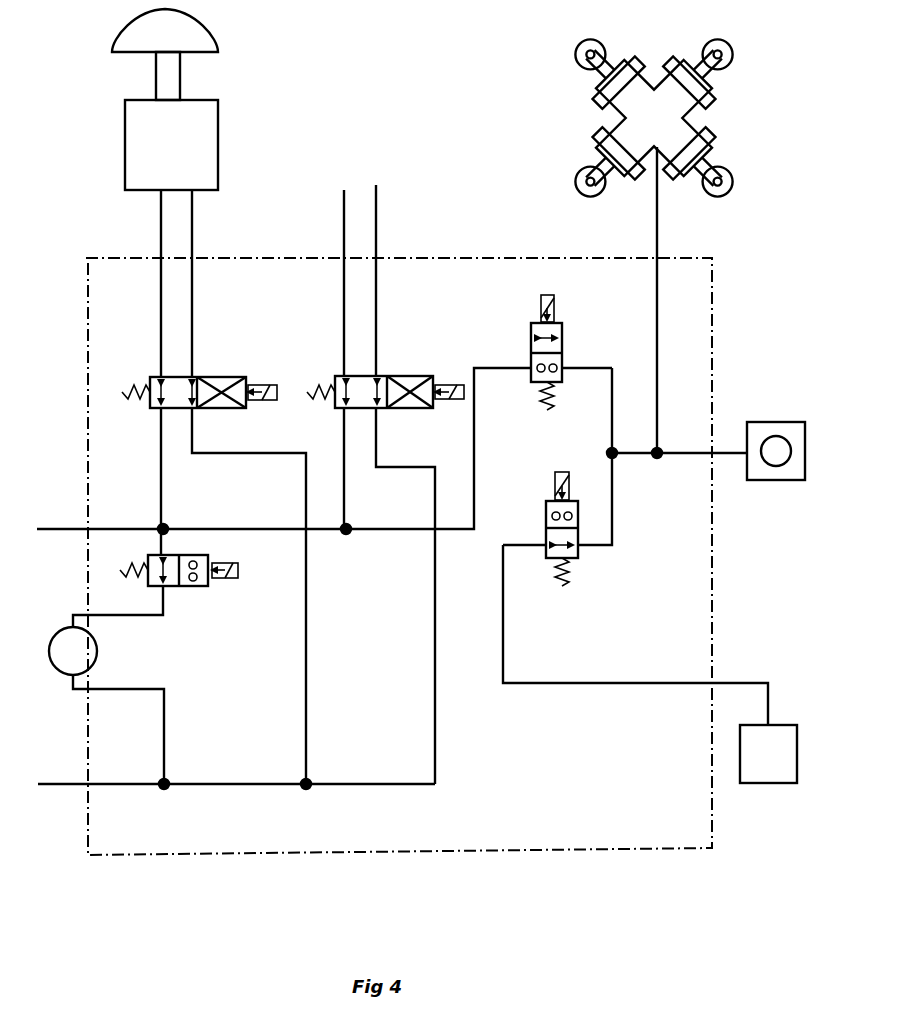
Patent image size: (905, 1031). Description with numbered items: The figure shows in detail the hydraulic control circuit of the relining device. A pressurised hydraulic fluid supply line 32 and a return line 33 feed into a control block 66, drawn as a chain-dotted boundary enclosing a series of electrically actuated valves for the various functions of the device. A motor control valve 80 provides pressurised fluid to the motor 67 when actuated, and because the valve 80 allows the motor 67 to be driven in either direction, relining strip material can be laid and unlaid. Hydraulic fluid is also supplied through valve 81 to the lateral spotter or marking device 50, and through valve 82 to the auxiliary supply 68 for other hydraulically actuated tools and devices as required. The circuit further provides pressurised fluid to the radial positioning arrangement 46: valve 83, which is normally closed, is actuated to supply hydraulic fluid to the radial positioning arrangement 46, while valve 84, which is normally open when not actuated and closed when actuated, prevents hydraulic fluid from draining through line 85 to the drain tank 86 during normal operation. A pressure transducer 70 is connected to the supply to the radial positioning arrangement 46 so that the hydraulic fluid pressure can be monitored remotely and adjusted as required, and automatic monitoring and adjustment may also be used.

The pressurised hydraulic fluid supply line 32 is at (48, 528).
The return line 33 is at (63, 788).
The radial positioning arrangement 46 is at (648, 118).
The lateral spotter or marking device 50 is at (198, 125).
The control block 66 is at (307, 853).
The motor 67 is at (68, 658).
The auxiliary supply 68 is at (362, 205).
The pressure transducer 70 is at (772, 443).
The motor control valve 80 is at (173, 572).
The valve 81 is at (210, 390).
The valve 82 is at (395, 387).
The valve 83 is at (558, 343).
The valve 84 is at (580, 545).
The line 85 is at (602, 685).
The drain tank 86 is at (769, 759).